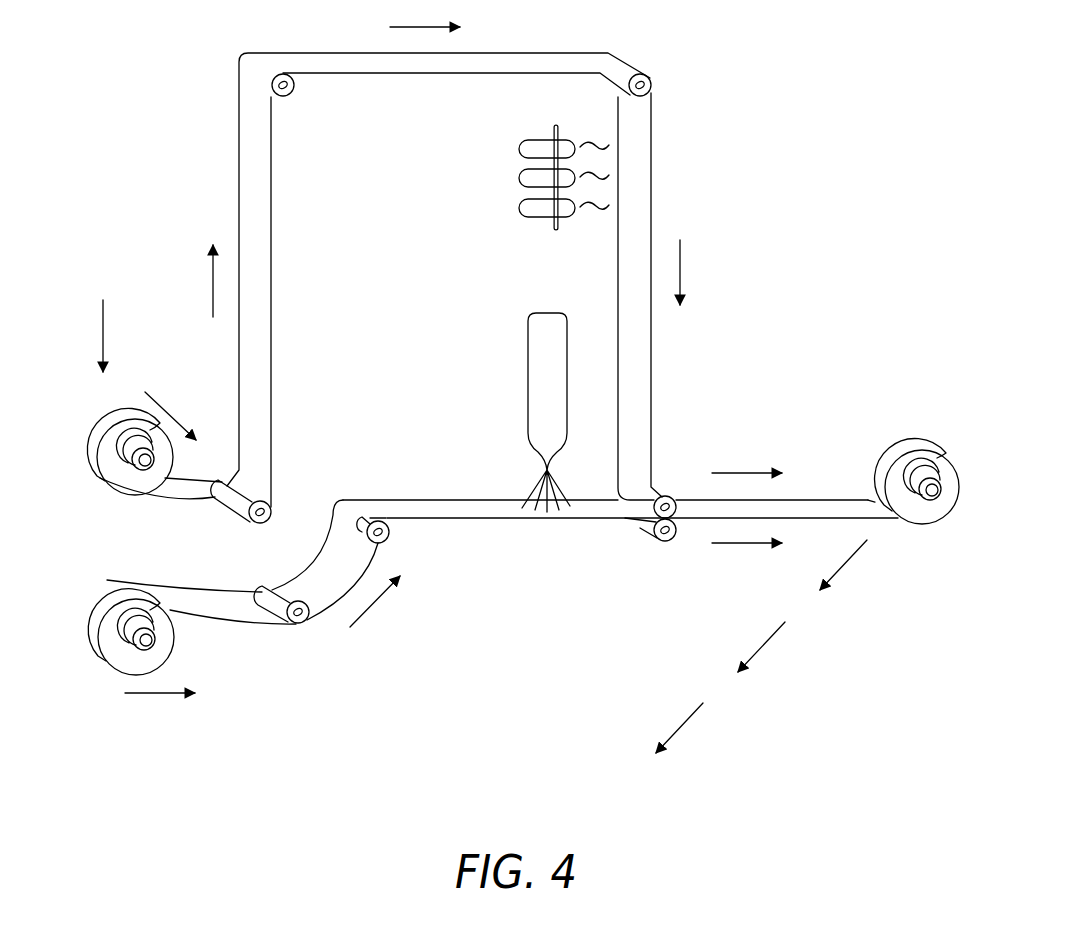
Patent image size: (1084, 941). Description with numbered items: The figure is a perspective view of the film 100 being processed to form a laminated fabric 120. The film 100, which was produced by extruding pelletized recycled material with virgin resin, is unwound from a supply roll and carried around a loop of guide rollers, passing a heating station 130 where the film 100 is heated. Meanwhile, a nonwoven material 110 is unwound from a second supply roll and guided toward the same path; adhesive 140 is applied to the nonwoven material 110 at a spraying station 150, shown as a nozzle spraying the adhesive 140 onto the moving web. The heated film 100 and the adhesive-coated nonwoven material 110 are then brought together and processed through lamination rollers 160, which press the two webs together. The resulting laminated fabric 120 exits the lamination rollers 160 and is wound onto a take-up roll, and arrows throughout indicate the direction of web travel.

The film 100 is at (87, 420).
The nonwoven material 110 is at (88, 600).
The laminated fabric 120 is at (908, 440).
The heating station 130 is at (520, 178).
The adhesive 140 is at (535, 492).
The spraying station 150 is at (528, 340).
The lamination rollers 160 is at (628, 550).